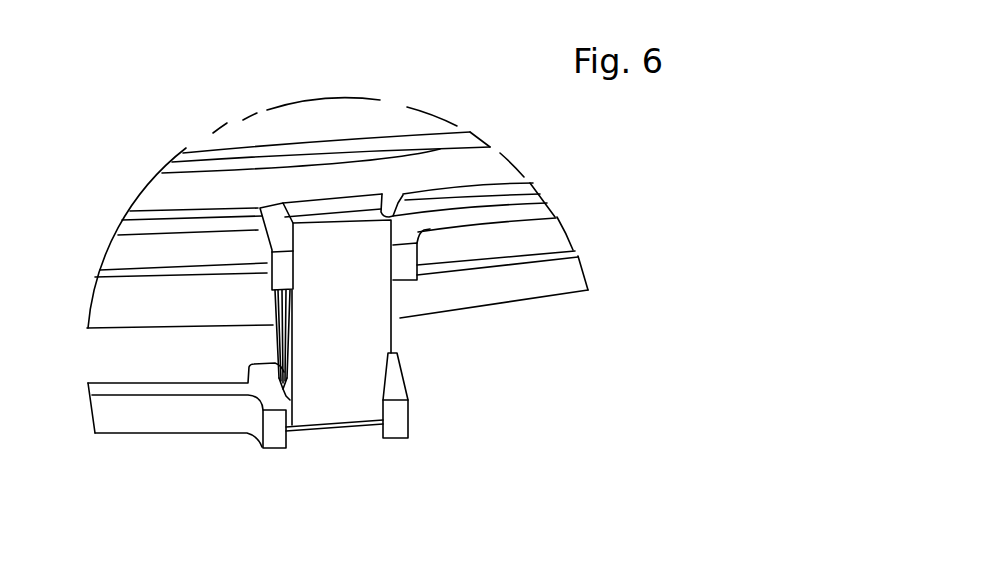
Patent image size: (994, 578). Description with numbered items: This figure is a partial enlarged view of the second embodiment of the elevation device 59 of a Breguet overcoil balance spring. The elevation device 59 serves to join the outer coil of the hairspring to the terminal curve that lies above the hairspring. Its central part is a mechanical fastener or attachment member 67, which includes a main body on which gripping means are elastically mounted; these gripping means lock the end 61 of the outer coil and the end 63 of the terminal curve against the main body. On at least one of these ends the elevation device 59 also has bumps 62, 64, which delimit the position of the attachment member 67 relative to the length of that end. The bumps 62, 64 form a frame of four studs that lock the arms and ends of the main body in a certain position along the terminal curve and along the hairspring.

The elevation device 59 is at (512, 391).
The end of outer coil 61 is at (533, 234).
The bump 62 is at (273, 214).
The end of terminal curve 63 is at (180, 423).
The bump 64 is at (393, 440).
The attachment member 67 is at (370, 331).